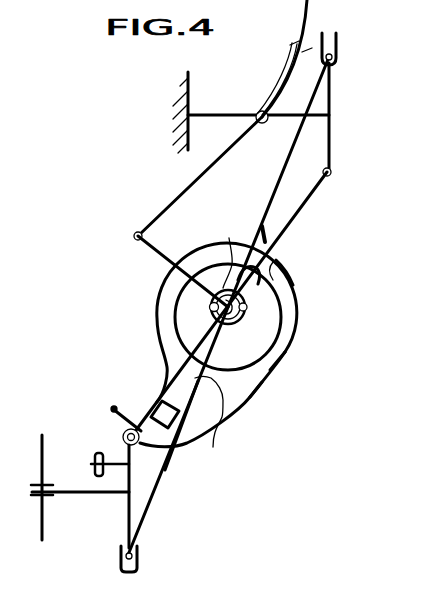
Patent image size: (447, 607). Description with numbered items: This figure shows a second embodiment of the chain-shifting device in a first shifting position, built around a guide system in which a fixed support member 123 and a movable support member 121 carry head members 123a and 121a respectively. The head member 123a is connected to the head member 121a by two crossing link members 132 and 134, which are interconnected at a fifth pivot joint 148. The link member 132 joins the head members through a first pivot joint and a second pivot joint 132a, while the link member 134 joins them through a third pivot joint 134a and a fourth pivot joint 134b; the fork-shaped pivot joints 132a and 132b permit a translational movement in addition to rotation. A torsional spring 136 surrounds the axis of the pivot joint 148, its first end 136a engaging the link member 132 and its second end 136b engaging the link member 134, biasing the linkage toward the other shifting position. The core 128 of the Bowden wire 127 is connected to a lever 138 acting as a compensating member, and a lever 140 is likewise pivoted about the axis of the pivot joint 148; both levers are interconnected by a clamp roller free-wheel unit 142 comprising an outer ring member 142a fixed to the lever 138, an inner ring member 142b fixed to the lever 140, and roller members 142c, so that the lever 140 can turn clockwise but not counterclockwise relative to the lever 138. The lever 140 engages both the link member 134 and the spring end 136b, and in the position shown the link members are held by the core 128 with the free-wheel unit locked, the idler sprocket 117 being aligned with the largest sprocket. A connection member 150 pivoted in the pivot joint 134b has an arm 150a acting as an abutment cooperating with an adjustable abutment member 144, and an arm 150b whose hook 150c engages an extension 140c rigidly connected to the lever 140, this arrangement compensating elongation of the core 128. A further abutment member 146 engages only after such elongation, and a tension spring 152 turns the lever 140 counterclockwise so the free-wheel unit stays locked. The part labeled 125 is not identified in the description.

The idler sprocket 117 is at (44, 530).
The movable support member 121 is at (79, 495).
The head member 121a is at (126, 522).
The fixed support member 123 is at (213, 113).
The head member 123a is at (333, 106).
The pivot pin 125 is at (259, 111).
The Bowden wire 127 is at (286, 54).
The core 128 is at (183, 197).
The link member 132 is at (288, 158).
The second pivot joint 132a is at (338, 40).
The pivot joint 132b is at (140, 560).
The link member 134 is at (318, 188).
The third pivot joint 134a is at (331, 170).
The fourth pivot joint 134b is at (122, 437).
The torsional spring 136 is at (294, 330).
The first end 136a is at (262, 215).
The second end 136b is at (160, 400).
The lever 138 is at (150, 255).
The lever 140 is at (227, 417).
The extension 140c is at (274, 270).
The clamp roller free-wheel unit 142 is at (286, 354).
The outer ring member 142a is at (250, 303).
The inner ring member 142b is at (226, 237).
The roller members 142c is at (250, 313).
The abutment member 144 is at (93, 462).
The abutment member 146 is at (116, 404).
The fifth pivot joint 148 is at (226, 326).
The connection member 150 is at (213, 447).
The arm 150a is at (112, 409).
The arm 150b is at (253, 390).
The hook 150c is at (283, 257).
The tension spring 152 is at (170, 462).